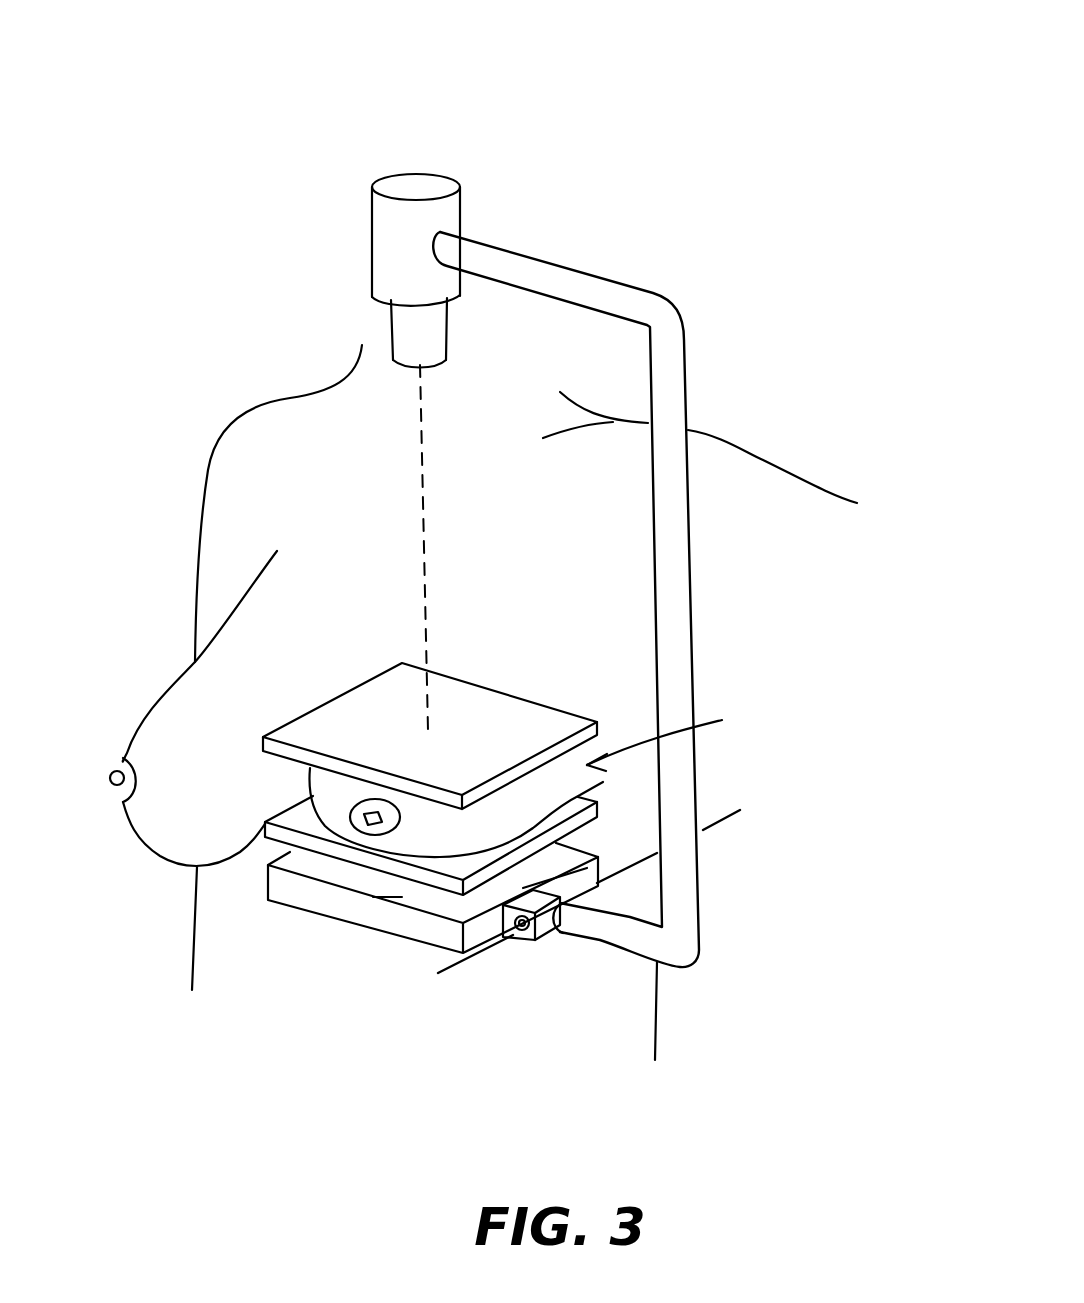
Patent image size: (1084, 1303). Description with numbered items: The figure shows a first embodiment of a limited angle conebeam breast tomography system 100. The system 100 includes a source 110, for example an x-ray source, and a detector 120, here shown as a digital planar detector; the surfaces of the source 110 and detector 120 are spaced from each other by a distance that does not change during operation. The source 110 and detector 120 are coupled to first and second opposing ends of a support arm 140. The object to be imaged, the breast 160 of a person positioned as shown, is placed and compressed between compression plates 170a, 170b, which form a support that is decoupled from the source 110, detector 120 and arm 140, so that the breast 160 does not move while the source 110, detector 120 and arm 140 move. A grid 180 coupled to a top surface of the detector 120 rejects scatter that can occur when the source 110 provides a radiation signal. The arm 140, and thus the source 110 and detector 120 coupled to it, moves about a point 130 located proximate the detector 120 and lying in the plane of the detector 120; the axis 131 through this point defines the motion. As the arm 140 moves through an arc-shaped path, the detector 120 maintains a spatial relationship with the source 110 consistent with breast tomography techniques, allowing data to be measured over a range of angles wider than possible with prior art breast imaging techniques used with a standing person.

The breast tomography system 100 is at (760, 208).
The source 110 is at (447, 208).
The detector 120 is at (327, 905).
The point 130 is at (524, 932).
The rotation axis 131 is at (760, 802).
The support arm 140 is at (673, 385).
The breast 160 is at (691, 737).
The compression plate 170a is at (547, 718).
The compression plate 170b is at (600, 814).
The grid 180 is at (387, 886).